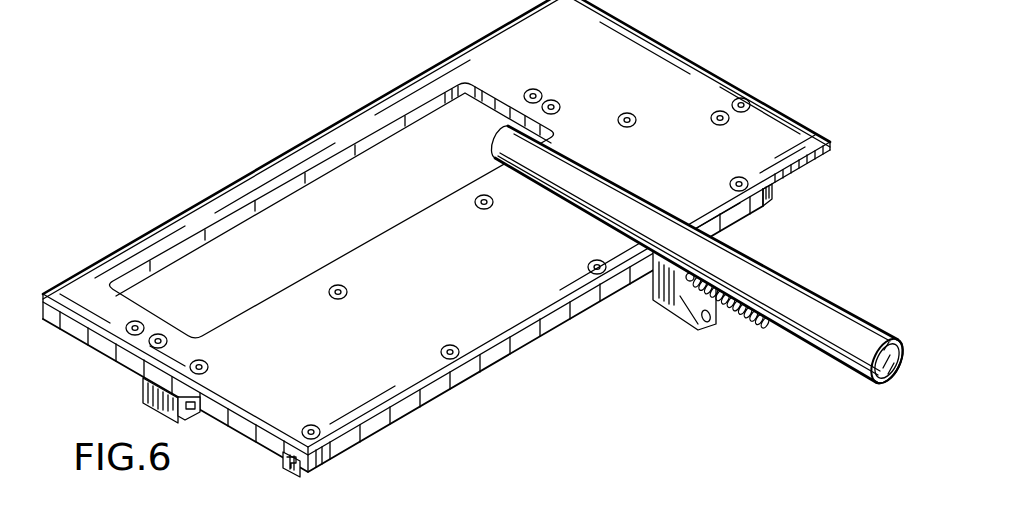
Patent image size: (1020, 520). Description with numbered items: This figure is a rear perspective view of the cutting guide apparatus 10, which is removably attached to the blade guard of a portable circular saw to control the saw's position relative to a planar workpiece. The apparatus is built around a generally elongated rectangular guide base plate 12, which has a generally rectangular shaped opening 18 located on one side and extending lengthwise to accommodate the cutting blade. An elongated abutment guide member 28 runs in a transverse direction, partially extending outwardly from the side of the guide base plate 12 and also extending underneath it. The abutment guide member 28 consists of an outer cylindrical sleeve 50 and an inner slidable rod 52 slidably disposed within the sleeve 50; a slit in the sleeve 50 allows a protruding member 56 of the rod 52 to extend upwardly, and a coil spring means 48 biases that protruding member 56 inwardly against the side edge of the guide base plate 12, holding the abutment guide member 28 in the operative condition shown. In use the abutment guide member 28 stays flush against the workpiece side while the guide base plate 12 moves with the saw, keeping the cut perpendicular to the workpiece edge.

The cutting guide apparatus 10 is at (476, 238).
The guide base plate 12 is at (436, 238).
The rectangular shaped opening 18 is at (308, 176).
The abutment guide member 28 is at (700, 291).
The coil spring means 48 is at (733, 311).
The outer cylindrical sleeve 50 is at (863, 355).
The inner slidable rod 52 is at (892, 393).
The protruding member 56 is at (674, 314).